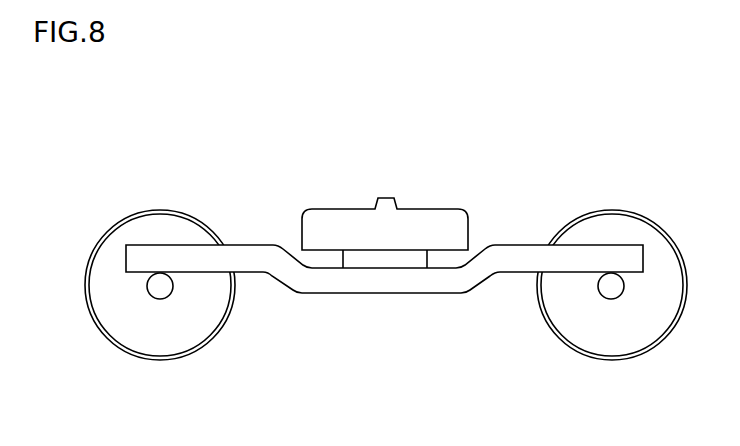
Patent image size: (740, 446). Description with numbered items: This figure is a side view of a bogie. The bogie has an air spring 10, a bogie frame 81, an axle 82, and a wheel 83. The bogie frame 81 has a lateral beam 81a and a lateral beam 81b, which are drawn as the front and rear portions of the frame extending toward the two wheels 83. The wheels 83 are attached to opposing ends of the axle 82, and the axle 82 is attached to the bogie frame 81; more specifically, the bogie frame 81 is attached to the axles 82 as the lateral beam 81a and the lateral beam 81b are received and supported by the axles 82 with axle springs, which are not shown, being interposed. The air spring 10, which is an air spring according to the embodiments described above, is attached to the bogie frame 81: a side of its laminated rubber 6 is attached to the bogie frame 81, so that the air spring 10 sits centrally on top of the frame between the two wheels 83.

The air spring 10 is at (427, 171).
The laminated rubber 6 is at (360, 258).
The bogie frame 81 is at (510, 368).
The lateral beam 81a is at (265, 262).
The lateral beam 81b is at (507, 262).
The axle 82 is at (162, 300).
The wheel 83 is at (207, 310).